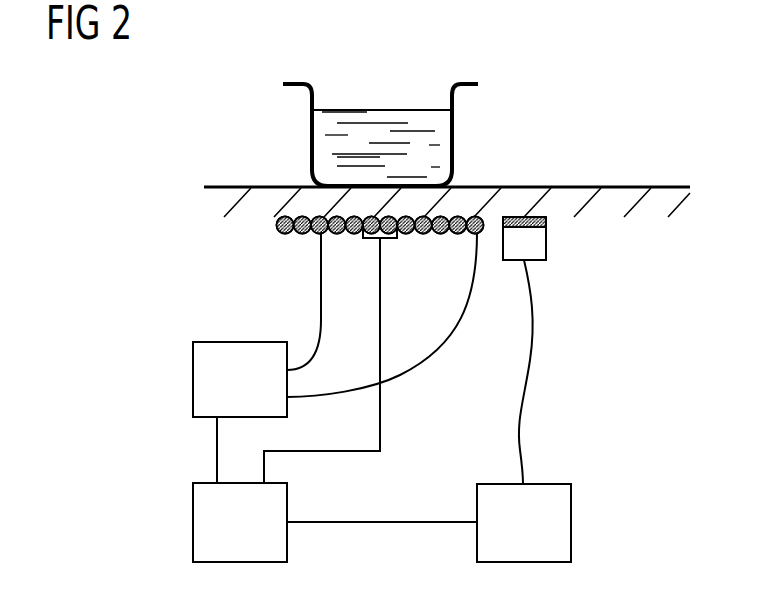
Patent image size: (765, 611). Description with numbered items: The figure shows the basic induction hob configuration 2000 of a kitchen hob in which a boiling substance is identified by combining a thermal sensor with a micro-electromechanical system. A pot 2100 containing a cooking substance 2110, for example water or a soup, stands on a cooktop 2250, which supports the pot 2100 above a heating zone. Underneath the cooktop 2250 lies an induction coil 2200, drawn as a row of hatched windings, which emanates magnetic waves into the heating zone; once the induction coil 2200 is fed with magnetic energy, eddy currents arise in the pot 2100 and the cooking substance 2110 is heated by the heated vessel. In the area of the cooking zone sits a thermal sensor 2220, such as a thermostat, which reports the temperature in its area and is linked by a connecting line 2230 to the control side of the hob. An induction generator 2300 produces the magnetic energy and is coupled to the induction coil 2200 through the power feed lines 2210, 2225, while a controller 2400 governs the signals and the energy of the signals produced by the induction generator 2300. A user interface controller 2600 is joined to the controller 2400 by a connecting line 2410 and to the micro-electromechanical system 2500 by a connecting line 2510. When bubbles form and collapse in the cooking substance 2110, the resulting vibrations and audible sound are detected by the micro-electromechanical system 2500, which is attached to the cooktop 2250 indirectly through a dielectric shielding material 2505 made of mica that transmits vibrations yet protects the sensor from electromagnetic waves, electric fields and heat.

The induction hob configuration 2000 is at (254, 166).
The pot 2100 is at (466, 84).
The cooking substance 2110 is at (380, 118).
The induction coil 2200 is at (277, 226).
The line for feeding power to induction coil 2210 is at (318, 300).
The thermal sensor 2220 is at (385, 238).
The coil lead line 2225 is at (430, 355).
The connecting line 2230 is at (381, 431).
The cooktop 2250 is at (611, 205).
The induction generator 2300 is at (192, 380).
The controller 2400 is at (192, 522).
The connecting line 2410 is at (383, 525).
The micro-electromechanical system 2500 is at (546, 250).
The dielectric shielding material 2505 is at (546, 222).
The connecting line 2510 is at (527, 437).
The user interface controller 2600 is at (574, 522).